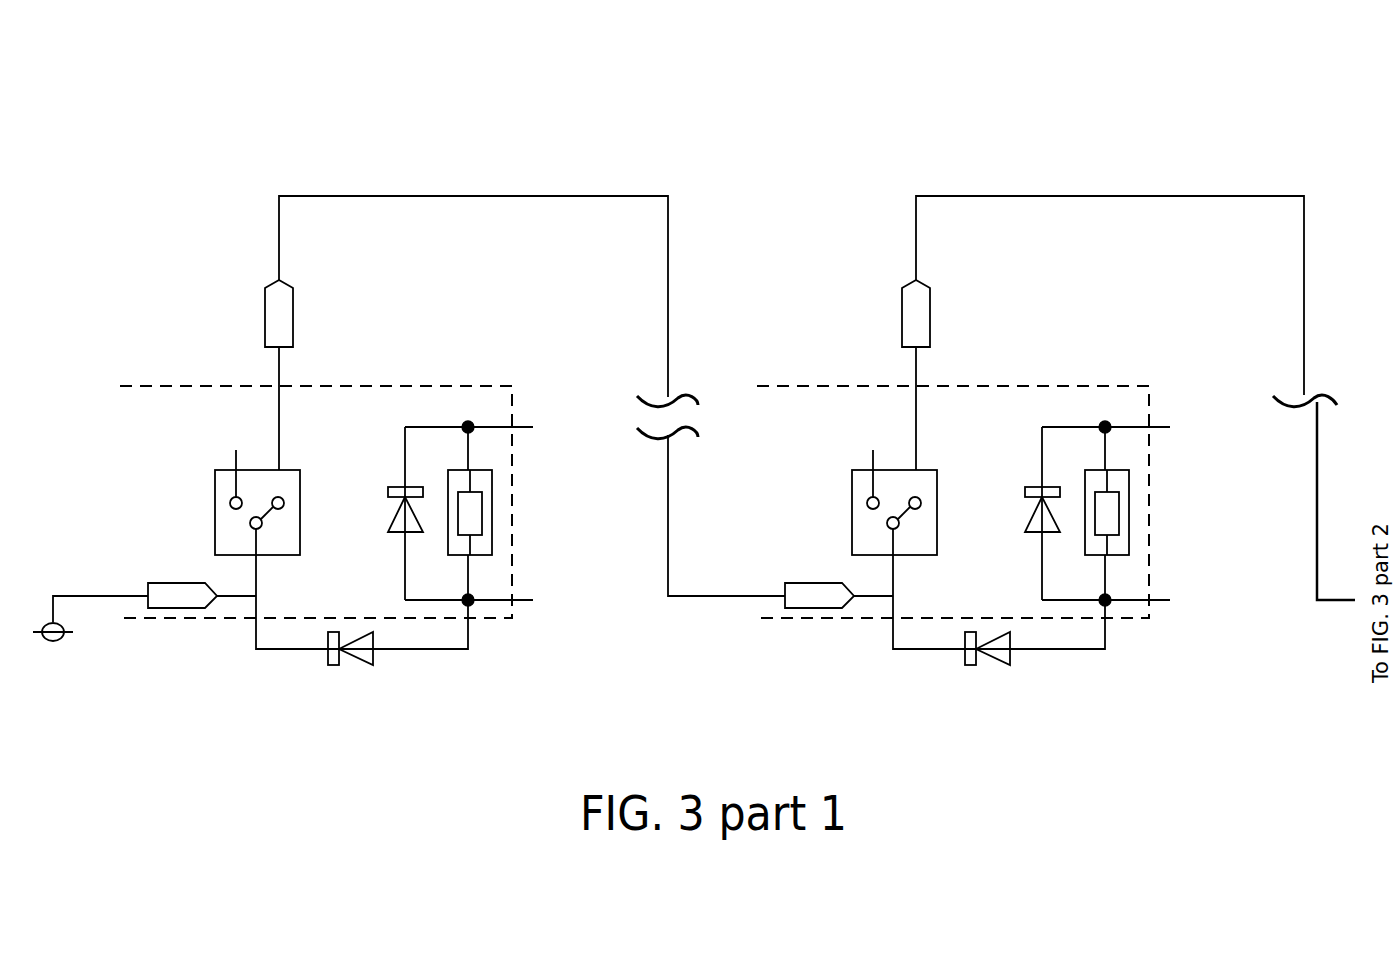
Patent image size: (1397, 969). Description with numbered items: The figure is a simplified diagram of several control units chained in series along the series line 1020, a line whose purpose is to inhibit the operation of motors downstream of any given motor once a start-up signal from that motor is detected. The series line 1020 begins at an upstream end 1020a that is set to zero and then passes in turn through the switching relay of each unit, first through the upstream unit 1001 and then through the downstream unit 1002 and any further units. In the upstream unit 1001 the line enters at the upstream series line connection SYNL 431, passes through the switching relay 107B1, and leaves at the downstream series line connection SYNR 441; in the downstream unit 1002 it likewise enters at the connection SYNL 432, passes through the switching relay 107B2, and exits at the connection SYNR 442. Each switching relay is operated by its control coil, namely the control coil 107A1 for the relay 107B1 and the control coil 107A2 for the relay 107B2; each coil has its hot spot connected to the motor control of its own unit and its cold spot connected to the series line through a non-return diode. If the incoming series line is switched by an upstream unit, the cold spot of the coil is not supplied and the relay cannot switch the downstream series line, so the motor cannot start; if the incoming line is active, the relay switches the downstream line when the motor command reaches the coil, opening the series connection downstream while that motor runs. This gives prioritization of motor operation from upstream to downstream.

The series line 1020 is at (572, 196).
The upstream end 1020a is at (50, 621).
The downstream series line connection SYNR 441 is at (293, 318).
The downstream series line connection SYNR 442 is at (947, 313).
The upstream series line connection SYNL 431 is at (175, 608).
The upstream series line connection SYNL 432 is at (839, 638).
The switching relay 107B1 is at (300, 522).
The switching relay 107B2 is at (978, 542).
The control coil 107A1 is at (492, 513).
The control coil 107A2 is at (1148, 513).
The upstream unit 1001 is at (453, 618).
The downstream unit 1002 is at (953, 567).